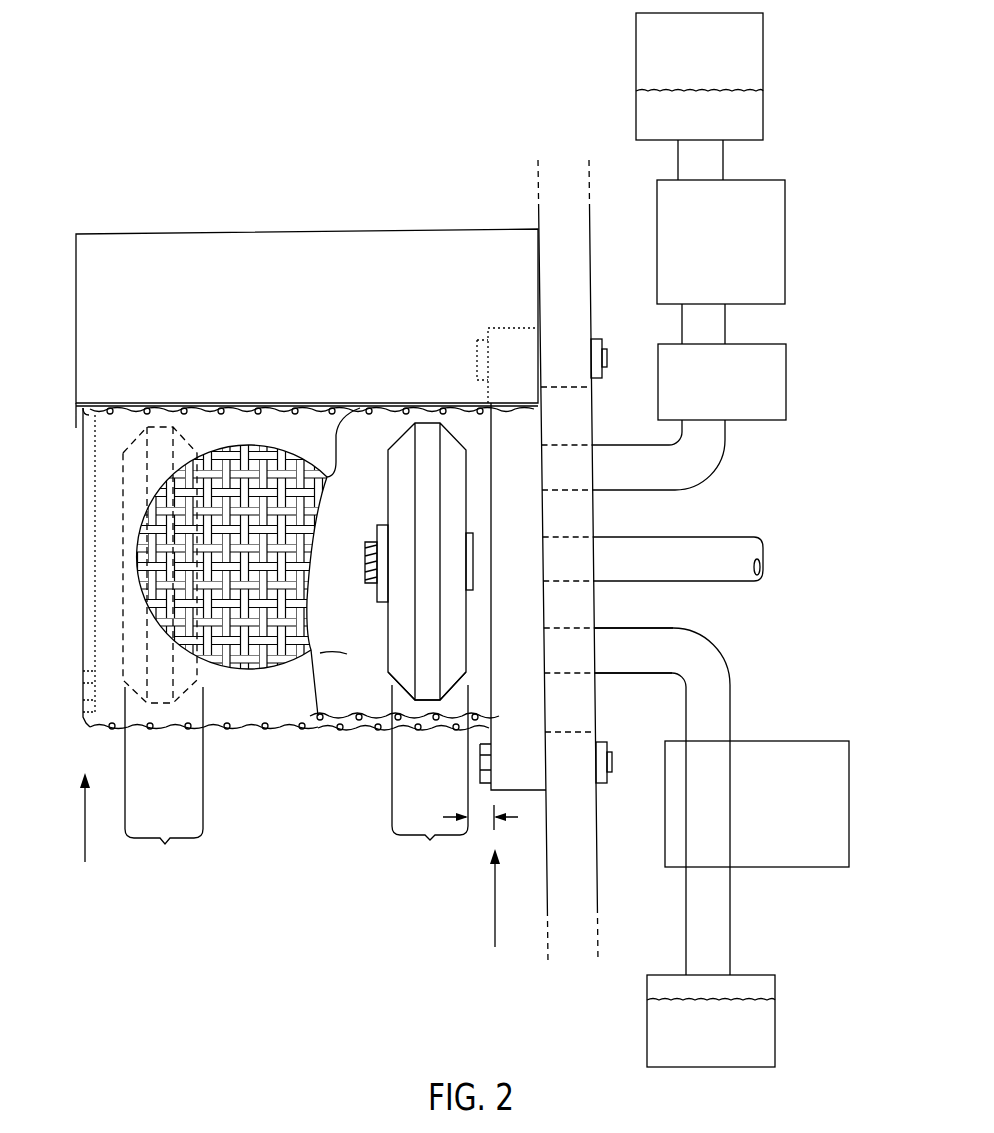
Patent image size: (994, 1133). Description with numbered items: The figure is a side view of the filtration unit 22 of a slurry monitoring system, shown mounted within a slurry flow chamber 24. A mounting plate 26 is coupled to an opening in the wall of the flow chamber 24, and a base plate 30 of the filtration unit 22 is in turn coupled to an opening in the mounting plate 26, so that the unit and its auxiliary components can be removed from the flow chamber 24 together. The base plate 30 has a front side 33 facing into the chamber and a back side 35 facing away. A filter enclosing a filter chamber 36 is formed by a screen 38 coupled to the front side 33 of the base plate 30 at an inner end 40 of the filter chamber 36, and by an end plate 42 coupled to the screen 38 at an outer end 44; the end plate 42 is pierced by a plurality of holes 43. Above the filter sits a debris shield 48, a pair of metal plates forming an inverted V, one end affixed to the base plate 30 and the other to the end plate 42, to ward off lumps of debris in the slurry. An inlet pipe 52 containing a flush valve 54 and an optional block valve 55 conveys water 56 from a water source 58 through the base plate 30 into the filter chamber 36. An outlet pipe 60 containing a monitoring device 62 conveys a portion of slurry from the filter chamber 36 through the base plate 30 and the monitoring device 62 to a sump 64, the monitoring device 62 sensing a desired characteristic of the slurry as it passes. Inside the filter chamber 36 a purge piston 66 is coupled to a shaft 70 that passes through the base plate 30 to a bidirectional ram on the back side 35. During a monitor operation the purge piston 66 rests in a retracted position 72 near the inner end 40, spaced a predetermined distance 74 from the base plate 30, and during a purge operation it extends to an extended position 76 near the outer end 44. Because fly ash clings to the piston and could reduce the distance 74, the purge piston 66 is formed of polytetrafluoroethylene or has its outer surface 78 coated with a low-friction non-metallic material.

The filtration unit 22 is at (439, 1031).
The slurry flow chamber 24 is at (258, 879).
The mounting plate 26 is at (582, 243).
The base plate 30 is at (542, 438).
The front side 33 is at (545, 705).
The back side 35 is at (597, 712).
The filter chamber 36 is at (322, 653).
The screen 38 is at (268, 667).
The inner end 40 is at (497, 909).
The end plate 42 is at (83, 558).
The holes 43 is at (83, 700).
The outer end 44 is at (84, 829).
The debris shield 48 is at (312, 237).
The inlet pipe 52 is at (715, 440).
The flush valve 54 is at (777, 197).
The block valve 55 is at (778, 350).
The water 56 is at (752, 103).
The water source 58 is at (753, 55).
The outlet pipe 60 is at (720, 688).
The monitoring device 62 is at (795, 746).
The sump 64 is at (770, 982).
The purge piston 66 is at (402, 666).
The shaft 70 is at (613, 548).
The retracted position 72 is at (430, 778).
The predetermined distance 74 is at (494, 820).
The extended position 76 is at (163, 649).
The outer surface 78 is at (388, 642).